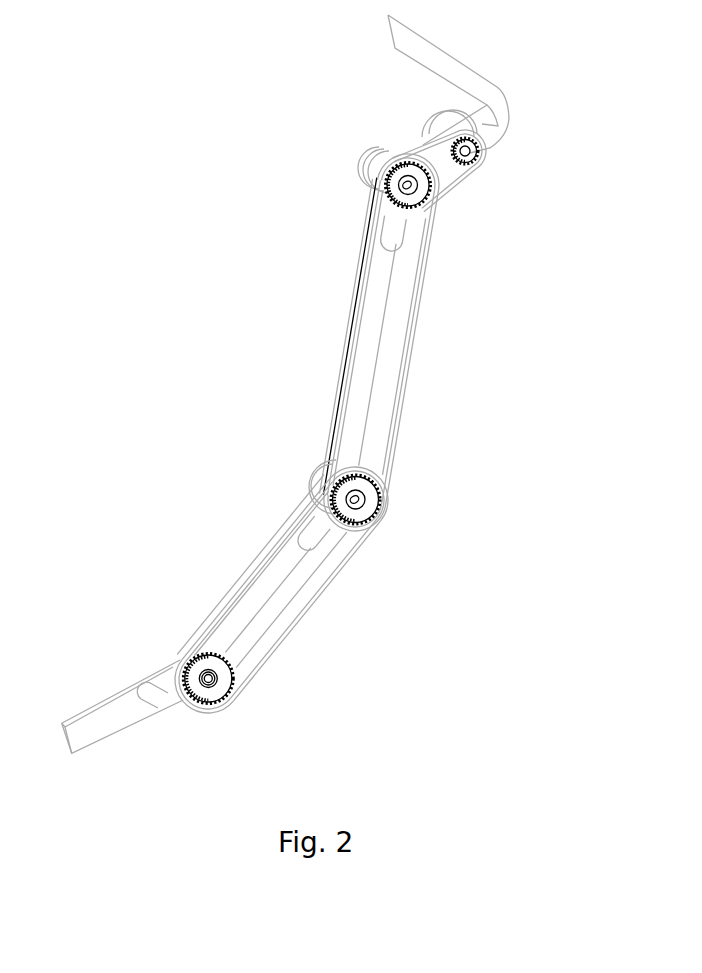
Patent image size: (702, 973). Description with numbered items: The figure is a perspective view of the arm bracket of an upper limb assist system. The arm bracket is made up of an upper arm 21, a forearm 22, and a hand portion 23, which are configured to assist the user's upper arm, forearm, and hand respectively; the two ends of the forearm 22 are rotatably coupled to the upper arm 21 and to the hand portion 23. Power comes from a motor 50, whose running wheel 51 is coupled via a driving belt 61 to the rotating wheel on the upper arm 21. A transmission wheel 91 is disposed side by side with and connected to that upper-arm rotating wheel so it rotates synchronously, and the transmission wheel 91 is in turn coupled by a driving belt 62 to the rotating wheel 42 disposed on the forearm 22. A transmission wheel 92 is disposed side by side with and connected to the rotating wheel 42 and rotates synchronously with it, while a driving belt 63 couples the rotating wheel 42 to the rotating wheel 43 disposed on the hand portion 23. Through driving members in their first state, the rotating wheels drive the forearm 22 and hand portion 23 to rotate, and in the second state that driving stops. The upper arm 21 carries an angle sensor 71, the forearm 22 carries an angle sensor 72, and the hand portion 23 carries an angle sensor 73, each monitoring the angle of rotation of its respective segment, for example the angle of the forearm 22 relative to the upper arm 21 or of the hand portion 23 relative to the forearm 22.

The motor 50 is at (447, 115).
The running wheel 51 is at (548, 182).
The driving belt 61 is at (525, 222).
The transmission wheel 91 is at (385, 175).
The upper arm 21 is at (363, 372).
The angle sensor 71 is at (483, 275).
The driving belt 62 is at (470, 398).
The rotating wheel 42 is at (340, 477).
The transmission wheel 92 is at (448, 538).
The forearm 22 is at (287, 578).
The angle sensor 72 is at (400, 585).
The driving belt 63 is at (385, 675).
The rotating wheel 43 is at (303, 733).
The hand portion 23 is at (120, 717).
The angle sensor 73 is at (188, 775).